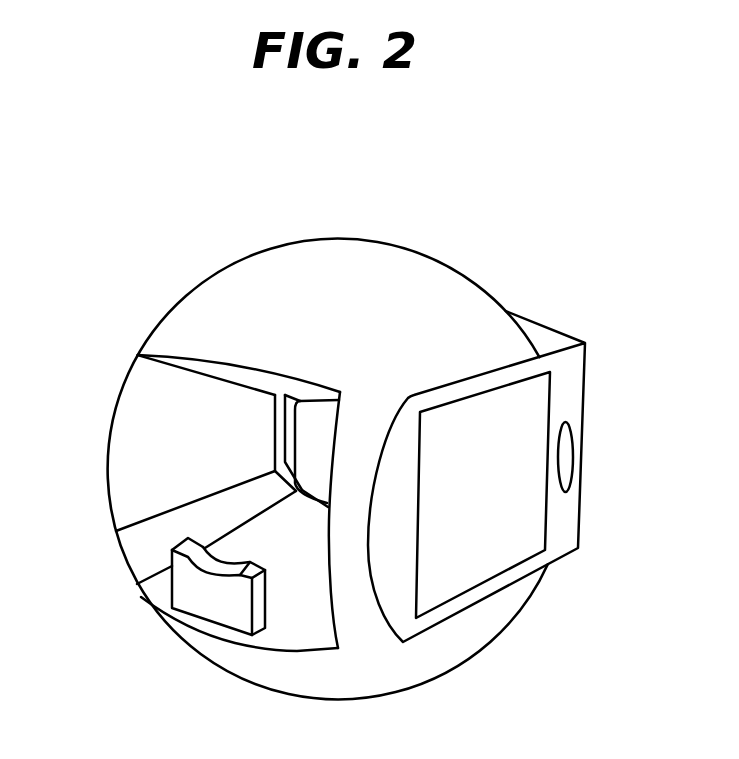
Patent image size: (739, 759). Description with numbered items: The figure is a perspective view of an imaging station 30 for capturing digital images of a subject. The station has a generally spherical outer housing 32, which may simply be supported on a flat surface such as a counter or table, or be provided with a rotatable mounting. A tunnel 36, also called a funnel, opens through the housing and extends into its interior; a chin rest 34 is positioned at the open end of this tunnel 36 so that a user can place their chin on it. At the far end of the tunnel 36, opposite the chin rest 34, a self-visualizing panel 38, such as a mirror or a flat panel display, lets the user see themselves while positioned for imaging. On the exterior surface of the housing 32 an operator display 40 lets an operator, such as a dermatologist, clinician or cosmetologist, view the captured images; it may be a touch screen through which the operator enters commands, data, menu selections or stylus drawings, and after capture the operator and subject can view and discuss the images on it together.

The imaging station 30 is at (155, 264).
The outer housing 32 is at (371, 241).
The chin rest 34 is at (192, 602).
The tunnel 36 is at (155, 439).
The self-visualizing panel 38 is at (309, 455).
The operator display 40 is at (495, 531).